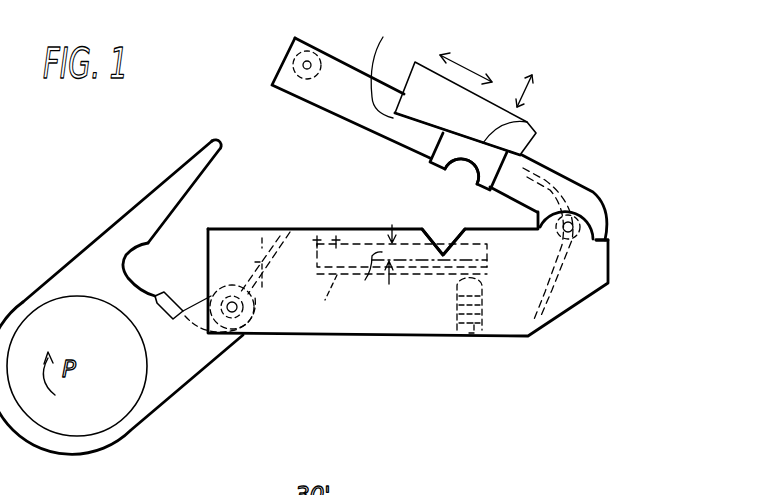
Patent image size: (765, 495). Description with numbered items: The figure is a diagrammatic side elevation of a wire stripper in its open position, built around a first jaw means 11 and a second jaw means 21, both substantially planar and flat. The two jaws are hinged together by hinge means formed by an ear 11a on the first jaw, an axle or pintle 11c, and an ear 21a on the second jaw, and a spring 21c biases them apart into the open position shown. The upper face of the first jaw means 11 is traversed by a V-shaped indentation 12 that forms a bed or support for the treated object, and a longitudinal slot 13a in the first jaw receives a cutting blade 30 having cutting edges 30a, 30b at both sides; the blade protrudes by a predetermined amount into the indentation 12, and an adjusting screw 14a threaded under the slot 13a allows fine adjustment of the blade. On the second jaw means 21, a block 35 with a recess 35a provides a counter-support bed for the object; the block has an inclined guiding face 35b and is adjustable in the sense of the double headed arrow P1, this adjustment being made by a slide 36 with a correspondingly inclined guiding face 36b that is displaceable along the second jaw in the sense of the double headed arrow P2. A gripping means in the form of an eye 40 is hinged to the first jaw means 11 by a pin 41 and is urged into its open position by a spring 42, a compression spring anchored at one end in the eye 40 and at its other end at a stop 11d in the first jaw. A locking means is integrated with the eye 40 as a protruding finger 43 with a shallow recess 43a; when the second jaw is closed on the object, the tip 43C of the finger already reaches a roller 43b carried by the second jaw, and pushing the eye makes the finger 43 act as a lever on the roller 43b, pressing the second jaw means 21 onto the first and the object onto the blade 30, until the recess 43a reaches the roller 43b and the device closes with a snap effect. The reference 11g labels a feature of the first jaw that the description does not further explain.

The first jaw means 11 is at (434, 281).
The ear 11a is at (607, 240).
The axle (pintle) 11c is at (606, 206).
The stop 11d is at (286, 248).
The groove of base block 11g is at (272, 228).
The V-shaped indentation 12 is at (455, 235).
The longitudinal slot 13a is at (312, 295).
The adjusting screw 14a is at (473, 338).
The second jaw means 21 is at (462, 125).
The ear 21a is at (593, 200).
The spring 21c is at (610, 269).
The cutting blade 30 is at (400, 250).
The cutting edge 30a is at (340, 225).
The cutting edge 30b is at (410, 277).
The block 35 is at (443, 170).
The recess 35a is at (473, 175).
The inclined guiding face 35b is at (527, 122).
The slide 36 is at (484, 79).
The inclined guiding face 36b is at (432, 20).
The eye 40 is at (188, 373).
The pin 41 is at (236, 312).
The spring 42 is at (179, 272).
The finger 43 is at (201, 164).
The shallow recess 43a is at (152, 251).
The roller 43b is at (290, 57).
The tip of the finger 43C is at (197, 155).
The double headed arrow P1 is at (542, 91).
The double headed arrow P2 is at (469, 60).